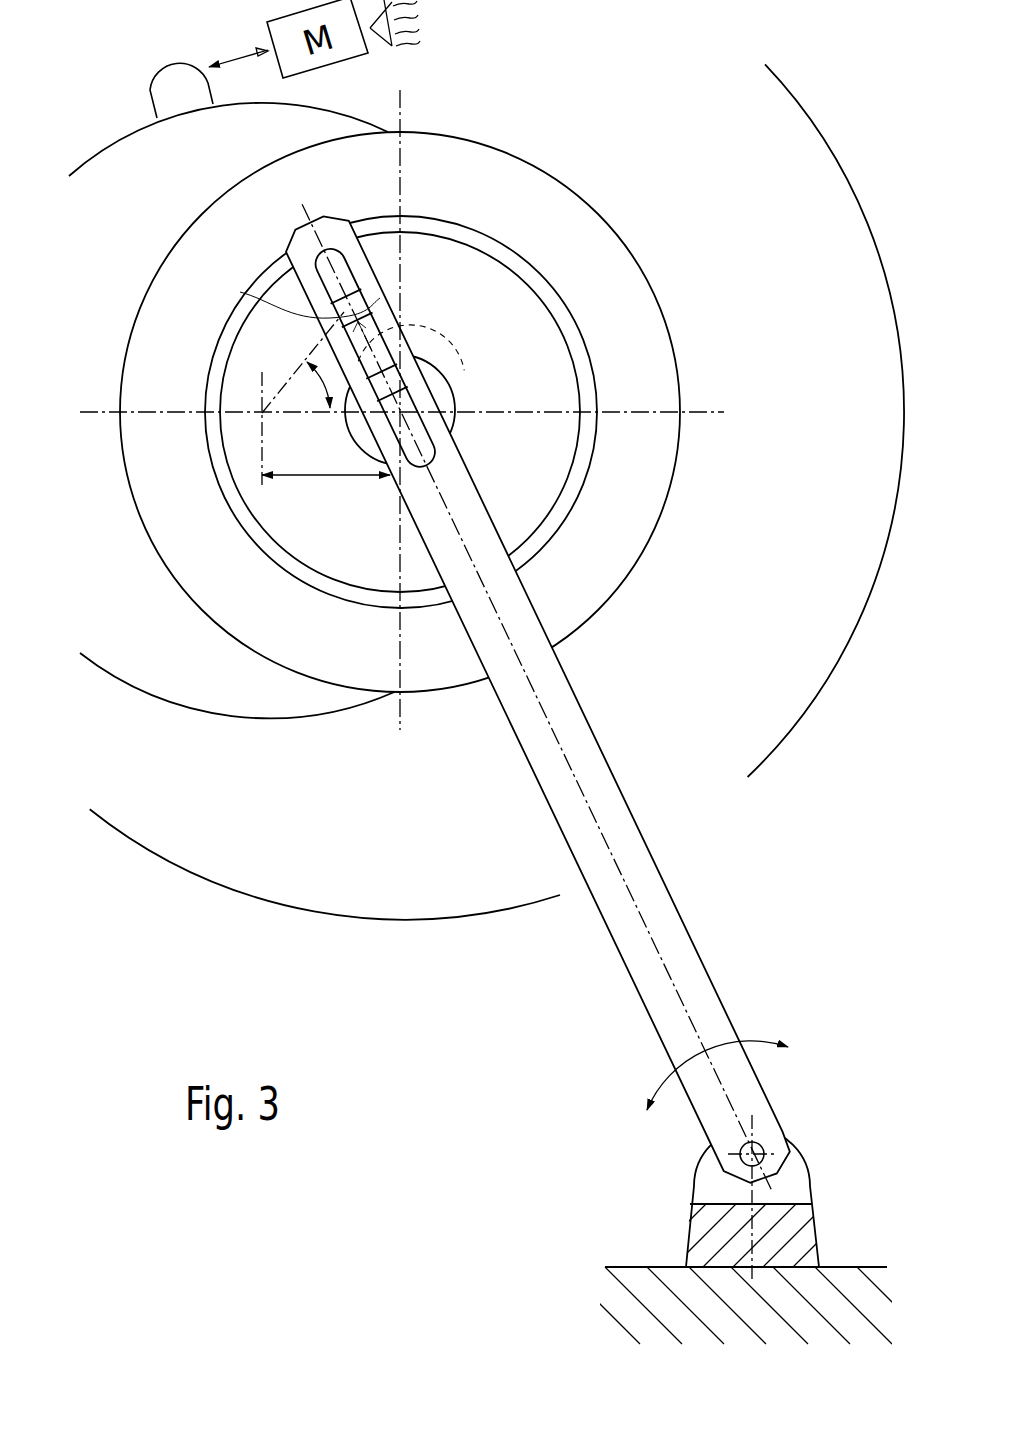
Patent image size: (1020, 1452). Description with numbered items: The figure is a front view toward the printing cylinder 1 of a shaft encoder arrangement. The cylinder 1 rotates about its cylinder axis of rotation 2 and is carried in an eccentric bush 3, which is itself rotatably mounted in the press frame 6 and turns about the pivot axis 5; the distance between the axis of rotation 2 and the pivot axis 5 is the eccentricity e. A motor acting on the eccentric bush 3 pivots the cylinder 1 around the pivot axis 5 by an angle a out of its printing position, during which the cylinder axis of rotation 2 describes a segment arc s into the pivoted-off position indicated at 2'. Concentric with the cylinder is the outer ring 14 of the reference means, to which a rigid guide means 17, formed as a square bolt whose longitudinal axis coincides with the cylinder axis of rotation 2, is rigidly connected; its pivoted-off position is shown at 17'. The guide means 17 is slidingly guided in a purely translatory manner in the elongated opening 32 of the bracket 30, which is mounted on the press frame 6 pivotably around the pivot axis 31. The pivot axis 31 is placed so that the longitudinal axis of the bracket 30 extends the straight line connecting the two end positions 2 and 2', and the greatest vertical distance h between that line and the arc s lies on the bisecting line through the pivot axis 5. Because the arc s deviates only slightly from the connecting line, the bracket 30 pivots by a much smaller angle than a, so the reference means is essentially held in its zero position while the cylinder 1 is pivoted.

The printing cylinder 1 is at (841, 170).
The cylinder axis of rotation 2 is at (441, 410).
The pivoted-off position 2' is at (411, 268).
The eccentric bush 3 is at (160, 662).
The pivot axis 5 is at (264, 410).
The press frame 6 is at (853, 1287).
The outer ring 14 is at (358, 648).
The guide means 17 is at (401, 412).
The guide means in pivoted-off position 17' is at (287, 285).
The bracket 30 is at (615, 818).
The pivot axis 31 is at (723, 1182).
The elongated opening 32 is at (440, 450).
The greatest vertical distance h is at (420, 318).
The segment arc s is at (432, 352).
The eccentricity e is at (326, 462).
The pivot angle a is at (303, 362).